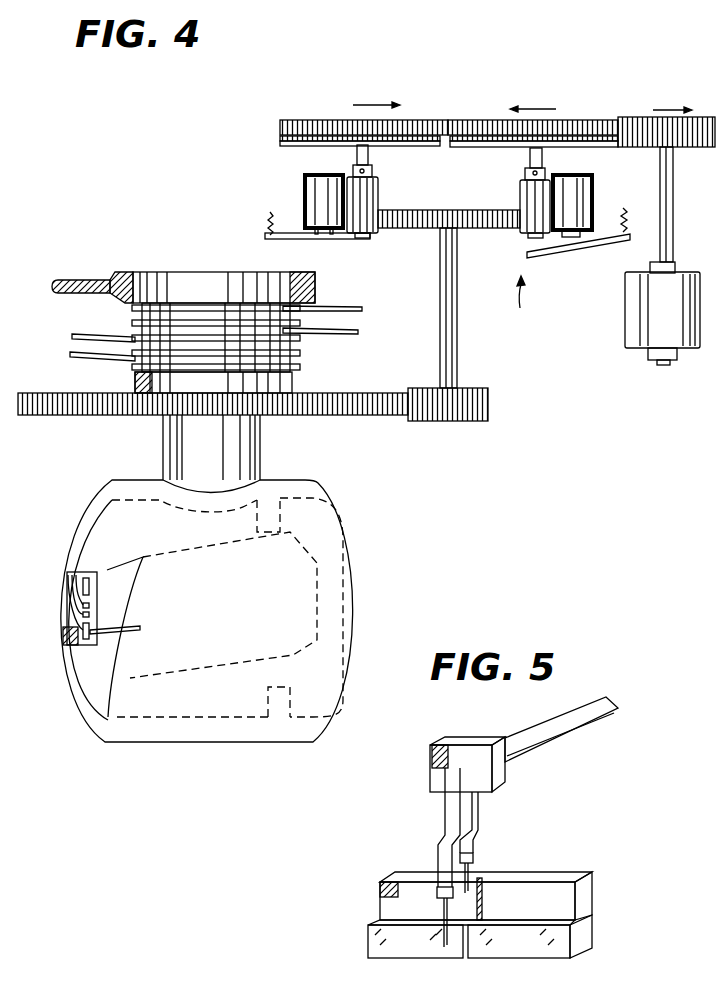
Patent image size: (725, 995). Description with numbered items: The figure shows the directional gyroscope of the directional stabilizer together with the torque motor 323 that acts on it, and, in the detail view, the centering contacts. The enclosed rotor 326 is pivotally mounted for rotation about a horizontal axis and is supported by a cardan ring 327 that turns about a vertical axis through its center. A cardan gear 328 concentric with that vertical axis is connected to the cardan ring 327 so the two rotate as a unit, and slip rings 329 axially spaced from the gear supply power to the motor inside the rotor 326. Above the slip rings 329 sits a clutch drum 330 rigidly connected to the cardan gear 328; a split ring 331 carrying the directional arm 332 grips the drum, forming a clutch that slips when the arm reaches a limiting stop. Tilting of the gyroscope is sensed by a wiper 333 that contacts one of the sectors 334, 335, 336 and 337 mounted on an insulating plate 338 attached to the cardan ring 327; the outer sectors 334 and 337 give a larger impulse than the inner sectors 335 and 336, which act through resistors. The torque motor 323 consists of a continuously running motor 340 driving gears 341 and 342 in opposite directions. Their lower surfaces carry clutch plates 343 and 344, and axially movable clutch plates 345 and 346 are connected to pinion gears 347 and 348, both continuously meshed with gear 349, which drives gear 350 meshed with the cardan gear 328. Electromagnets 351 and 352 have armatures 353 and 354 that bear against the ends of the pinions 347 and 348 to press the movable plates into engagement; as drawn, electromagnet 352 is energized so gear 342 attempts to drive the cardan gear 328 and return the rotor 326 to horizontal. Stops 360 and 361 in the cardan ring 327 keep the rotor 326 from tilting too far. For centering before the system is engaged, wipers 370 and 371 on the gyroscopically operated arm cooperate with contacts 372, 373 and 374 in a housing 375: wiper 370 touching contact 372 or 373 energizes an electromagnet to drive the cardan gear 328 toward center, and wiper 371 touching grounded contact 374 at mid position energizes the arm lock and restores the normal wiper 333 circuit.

In FIG. 4, the torque motor 323 is at (528, 302).
In FIG. 4, the rotor 326 is at (118, 650).
In FIG. 4, the cardan ring 327 is at (323, 505).
In FIG. 4, the cardan gear 328 is at (342, 394).
In FIG. 4, the slip rings 329 is at (135, 322).
In FIG. 4, the clutch drum 330 is at (183, 272).
In FIG. 4, the ring 331 is at (122, 272).
In FIG. 4, the directional arm 332 is at (62, 280).
In FIG. 5, the directional arm 332 is at (565, 722).
In FIG. 4, the wiper 333 is at (140, 629).
In FIG. 4, the sector 334 is at (72, 645).
In FIG. 4, the sector 335 is at (89, 614).
In FIG. 4, the sector 336 is at (89, 605).
In FIG. 4, the sector 337 is at (89, 586).
In FIG. 4, the insulating plate 338 is at (67, 630).
In FIG. 4, the motor 340 is at (626, 310).
In FIG. 4, the gear 341 is at (568, 123).
In FIG. 4, the gear 342 is at (322, 120).
In FIG. 4, the clutch plate 343 is at (601, 147).
In FIG. 4, the clutch plate 344 is at (283, 139).
In FIG. 4, the clutch plate 345 is at (545, 146).
In FIG. 4, the clutch plate 346 is at (318, 146).
In FIG. 4, the pinion gear 347 is at (521, 200).
In FIG. 4, the pinion gear 348 is at (379, 197).
In FIG. 4, the gear 349 is at (430, 212).
In FIG. 4, the gear 350 is at (430, 421).
In FIG. 4, the electromagnet 351 is at (592, 190).
In FIG. 4, the electromagnet 352 is at (311, 194).
In FIG. 4, the armature 353 is at (565, 250).
In FIG. 4, the armature 354 is at (343, 240).
In FIG. 4, the stop 360 is at (256, 520).
In FIG. 4, the stop 361 is at (265, 702).
In FIG. 5, the wiper 370 is at (444, 812).
In FIG. 5, the wiper 371 is at (477, 816).
In FIG. 5, the contact 372 is at (388, 958).
In FIG. 5, the contact 373 is at (493, 958).
In FIG. 5, the contact 374 is at (483, 880).
In FIG. 5, the base block 375 is at (573, 875).